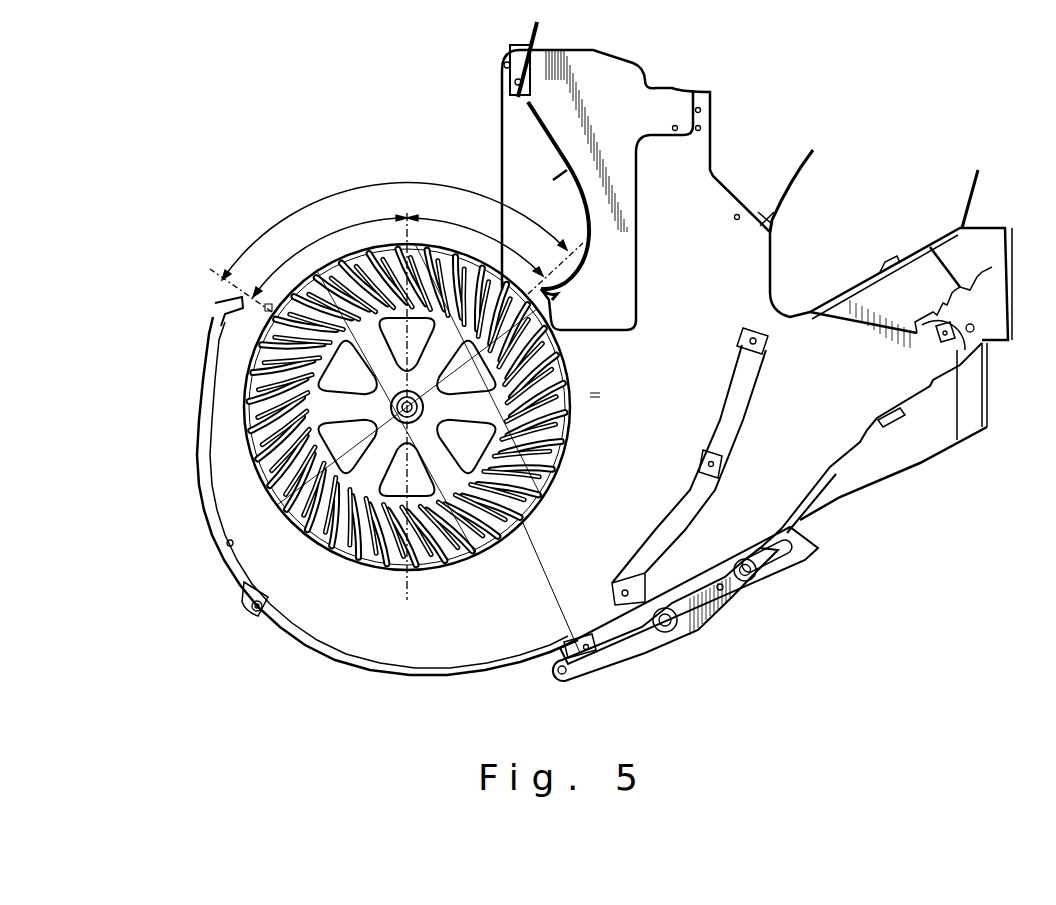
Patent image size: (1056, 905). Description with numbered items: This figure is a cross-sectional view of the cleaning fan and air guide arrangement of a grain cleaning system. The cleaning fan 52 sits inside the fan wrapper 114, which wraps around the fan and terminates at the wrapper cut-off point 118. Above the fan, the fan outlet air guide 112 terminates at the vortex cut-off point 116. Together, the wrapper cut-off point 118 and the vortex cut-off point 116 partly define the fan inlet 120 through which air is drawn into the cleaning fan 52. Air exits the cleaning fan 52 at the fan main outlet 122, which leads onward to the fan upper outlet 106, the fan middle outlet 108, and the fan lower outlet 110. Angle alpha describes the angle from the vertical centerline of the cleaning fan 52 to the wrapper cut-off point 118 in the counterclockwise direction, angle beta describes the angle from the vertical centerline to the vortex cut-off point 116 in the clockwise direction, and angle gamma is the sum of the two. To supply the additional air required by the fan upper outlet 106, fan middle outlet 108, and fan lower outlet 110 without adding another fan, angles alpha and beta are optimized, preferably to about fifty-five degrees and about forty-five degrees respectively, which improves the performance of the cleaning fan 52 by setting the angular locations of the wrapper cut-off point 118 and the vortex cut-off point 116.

The cleaning fan 52 is at (447, 567).
The fan lower outlet 110 is at (868, 373).
The fan outlet air guide 112 is at (562, 160).
The fan wrapper 114 is at (212, 520).
The vortex cut-off point 116 is at (560, 292).
The wrapper cut-off point 118 is at (228, 306).
The fan inlet 120 is at (333, 192).
The fan main outlet 122 is at (668, 408).
The fan upper outlet 106 is at (661, 175).
The fan middle outlet 108 is at (680, 48).